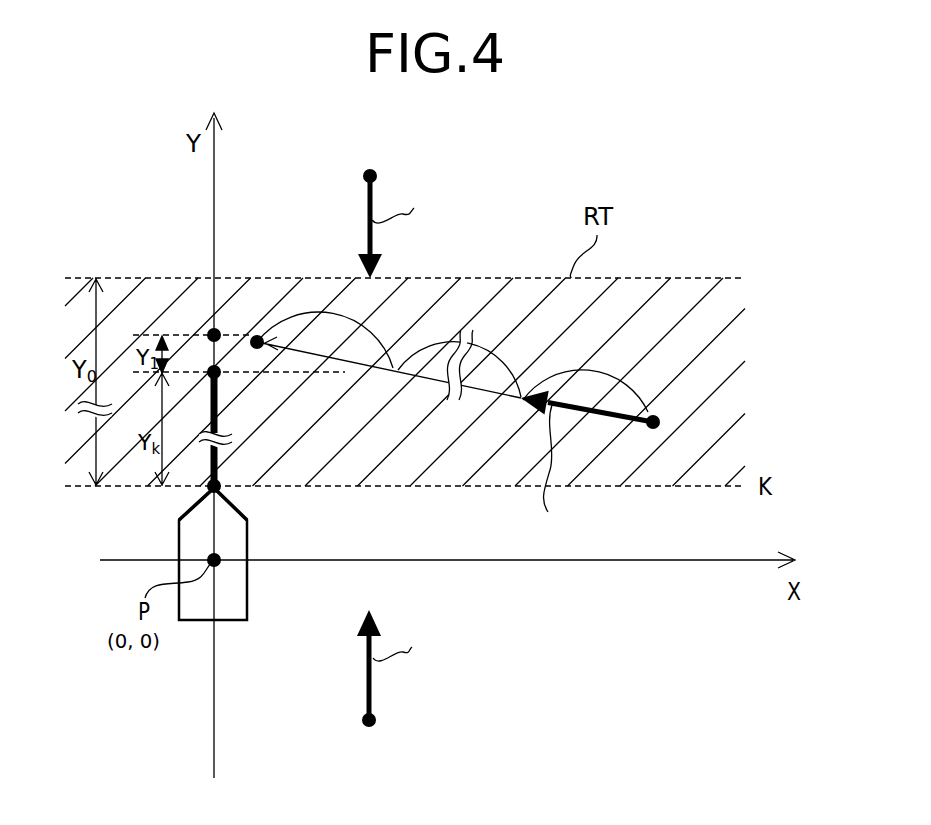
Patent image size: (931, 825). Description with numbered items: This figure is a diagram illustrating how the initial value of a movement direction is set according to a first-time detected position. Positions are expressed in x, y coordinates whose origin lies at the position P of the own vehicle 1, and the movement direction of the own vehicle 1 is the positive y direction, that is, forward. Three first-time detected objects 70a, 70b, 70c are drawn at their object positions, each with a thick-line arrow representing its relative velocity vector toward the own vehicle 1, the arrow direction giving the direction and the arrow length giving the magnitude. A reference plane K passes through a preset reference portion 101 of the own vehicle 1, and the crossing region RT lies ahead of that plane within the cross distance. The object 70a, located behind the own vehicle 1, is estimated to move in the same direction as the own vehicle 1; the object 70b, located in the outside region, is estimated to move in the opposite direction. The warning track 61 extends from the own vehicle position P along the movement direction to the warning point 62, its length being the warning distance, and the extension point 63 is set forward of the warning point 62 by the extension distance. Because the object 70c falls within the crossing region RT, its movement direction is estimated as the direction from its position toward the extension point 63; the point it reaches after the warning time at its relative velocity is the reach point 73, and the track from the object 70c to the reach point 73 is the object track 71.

The own vehicle 1 is at (248, 520).
The warning track 61 is at (218, 462).
The warning point 62 is at (213, 372).
The extension point 63 is at (214, 335).
The object 70a is at (376, 712).
The object 70b is at (376, 166).
The object 70c is at (662, 413).
The object track 71 is at (469, 388).
The reach point 73 is at (257, 342).
The reference portion 101 is at (207, 490).